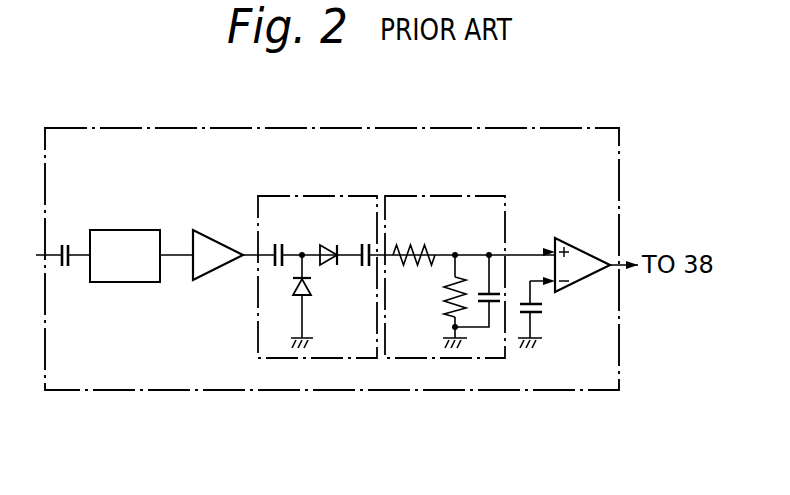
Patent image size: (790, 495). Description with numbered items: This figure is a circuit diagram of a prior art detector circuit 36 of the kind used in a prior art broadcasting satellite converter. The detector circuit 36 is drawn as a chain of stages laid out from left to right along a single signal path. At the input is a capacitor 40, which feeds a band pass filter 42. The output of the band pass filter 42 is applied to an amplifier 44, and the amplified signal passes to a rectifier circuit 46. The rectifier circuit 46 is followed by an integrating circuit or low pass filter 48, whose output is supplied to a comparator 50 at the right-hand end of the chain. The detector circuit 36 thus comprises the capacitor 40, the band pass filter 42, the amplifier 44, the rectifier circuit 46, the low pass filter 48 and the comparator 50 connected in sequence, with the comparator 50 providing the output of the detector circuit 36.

The detector circuit 36 is at (566, 121).
The capacitor 40 is at (71, 246).
The band pass filter 42 is at (126, 230).
The amplifier 44 is at (223, 244).
The rectifier circuit 46 is at (318, 197).
The integrating circuit or low pass filter 48 is at (425, 197).
The comparator 50 is at (586, 248).